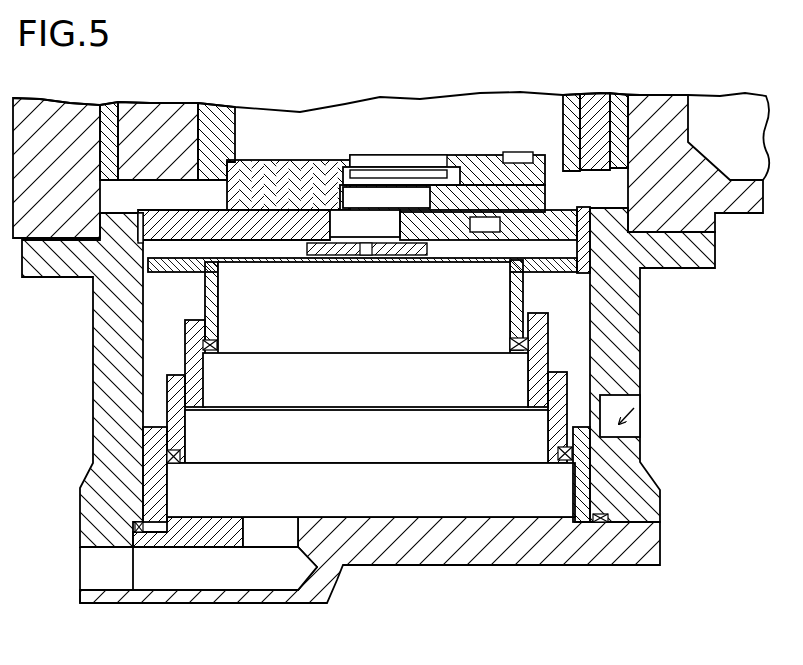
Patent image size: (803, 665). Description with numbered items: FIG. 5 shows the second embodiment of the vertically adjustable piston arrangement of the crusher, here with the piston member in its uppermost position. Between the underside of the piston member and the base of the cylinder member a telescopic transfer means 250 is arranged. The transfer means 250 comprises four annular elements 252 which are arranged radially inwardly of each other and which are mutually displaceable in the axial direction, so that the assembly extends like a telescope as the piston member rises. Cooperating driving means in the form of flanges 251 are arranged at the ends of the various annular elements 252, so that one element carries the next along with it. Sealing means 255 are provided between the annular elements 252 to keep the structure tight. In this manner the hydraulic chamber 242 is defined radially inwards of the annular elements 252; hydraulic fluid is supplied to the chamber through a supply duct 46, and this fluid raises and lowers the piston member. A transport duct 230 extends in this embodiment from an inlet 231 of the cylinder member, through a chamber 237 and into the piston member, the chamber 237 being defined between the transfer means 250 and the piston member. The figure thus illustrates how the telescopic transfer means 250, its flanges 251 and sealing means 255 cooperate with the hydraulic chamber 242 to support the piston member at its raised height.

The chamber 237 is at (572, 301).
The sealing means 255 is at (203, 396).
The telescopic transfer means 250 is at (527, 377).
The flanges 251 is at (215, 344).
The annular elements 252 is at (587, 483).
The hydraulic chamber 242 is at (453, 493).
The transport duct 230 is at (620, 418).
The inlet 231 is at (623, 428).
The supply duct 46 is at (230, 563).